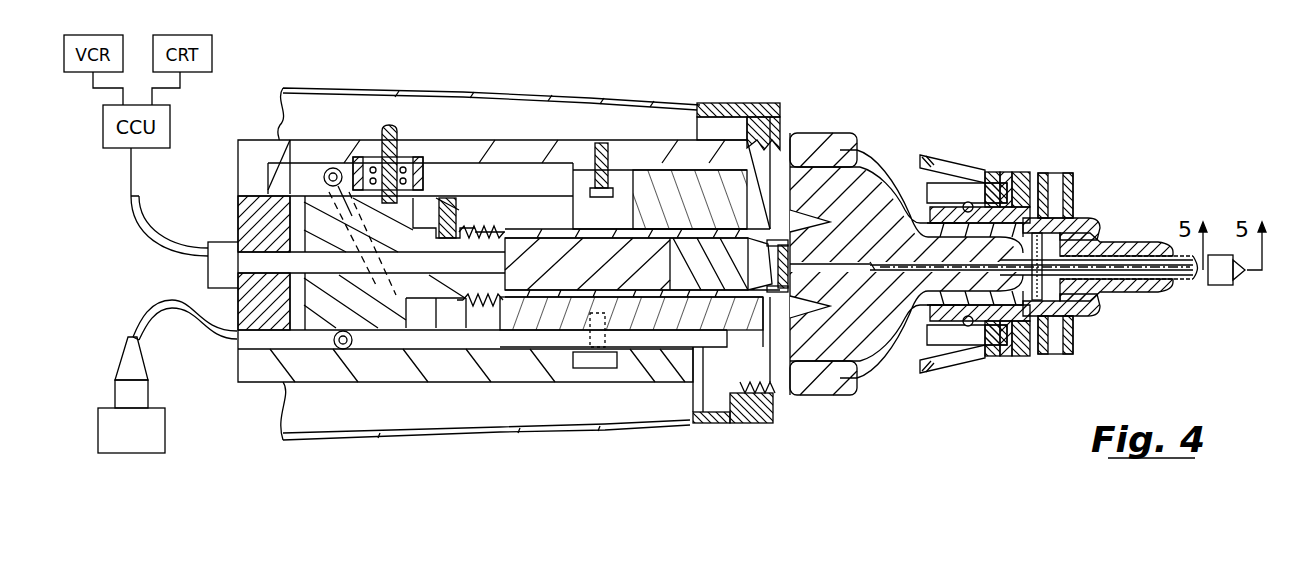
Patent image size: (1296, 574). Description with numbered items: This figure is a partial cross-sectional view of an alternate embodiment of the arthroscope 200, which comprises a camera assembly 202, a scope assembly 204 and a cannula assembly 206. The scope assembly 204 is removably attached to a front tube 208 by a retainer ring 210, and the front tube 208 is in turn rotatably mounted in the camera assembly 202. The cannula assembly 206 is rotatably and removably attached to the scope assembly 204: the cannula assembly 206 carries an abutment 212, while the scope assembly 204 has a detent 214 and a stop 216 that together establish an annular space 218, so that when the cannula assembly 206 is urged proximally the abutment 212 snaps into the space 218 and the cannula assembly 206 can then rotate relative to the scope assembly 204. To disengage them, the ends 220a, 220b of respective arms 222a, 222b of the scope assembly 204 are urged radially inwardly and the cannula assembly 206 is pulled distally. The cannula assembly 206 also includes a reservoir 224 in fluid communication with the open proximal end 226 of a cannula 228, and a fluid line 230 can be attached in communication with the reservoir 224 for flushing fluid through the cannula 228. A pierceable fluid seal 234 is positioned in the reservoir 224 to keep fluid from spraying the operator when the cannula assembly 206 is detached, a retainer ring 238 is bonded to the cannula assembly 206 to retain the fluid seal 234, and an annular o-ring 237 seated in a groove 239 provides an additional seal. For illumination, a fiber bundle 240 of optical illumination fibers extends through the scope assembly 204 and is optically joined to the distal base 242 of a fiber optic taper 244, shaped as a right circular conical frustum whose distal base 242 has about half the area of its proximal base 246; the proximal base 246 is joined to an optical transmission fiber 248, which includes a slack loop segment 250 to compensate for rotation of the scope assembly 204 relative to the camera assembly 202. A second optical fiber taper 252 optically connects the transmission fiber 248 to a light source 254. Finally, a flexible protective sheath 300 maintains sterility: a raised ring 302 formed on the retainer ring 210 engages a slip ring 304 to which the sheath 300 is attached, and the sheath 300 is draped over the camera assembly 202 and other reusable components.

The arthroscope 200 is at (492, 438).
The camera assembly 202 is at (508, 147).
The scope assembly 204 is at (873, 153).
The cannula assembly 206 is at (1150, 240).
The front tube 208 is at (722, 187).
The retainer ring 210 is at (838, 133).
The abutment 212 is at (1003, 190).
The detent 214 is at (1017, 190).
The stop 216 is at (982, 187).
The annular space 218 is at (993, 190).
The end of arm 220a is at (935, 150).
The end of arm 220b is at (923, 375).
The arm 222a is at (958, 157).
The arm 222b is at (952, 368).
The reservoir 224 is at (1085, 292).
The open proximal end 226 is at (1082, 232).
The cannula 228 is at (1158, 243).
The fluid line 230 is at (1042, 173).
The pierceable fluid seal 234 is at (1080, 312).
The annular o-ring 237 is at (962, 372).
The retainer ring 238 is at (1080, 205).
The groove 239 is at (943, 365).
The fiber bundle 240 is at (861, 382).
The distal base 242 is at (793, 383).
The fiber optic taper 244 is at (730, 340).
The proximal base 246 is at (710, 338).
The optical transmission fiber 248 is at (637, 343).
The slack loop segment 250 is at (376, 295).
The second optical fiber taper 252 is at (122, 362).
The light source 254 is at (98, 432).
The flexible protective sheath 300 is at (556, 432).
The raised ring 302 is at (745, 425).
The slip ring 304 is at (718, 430).